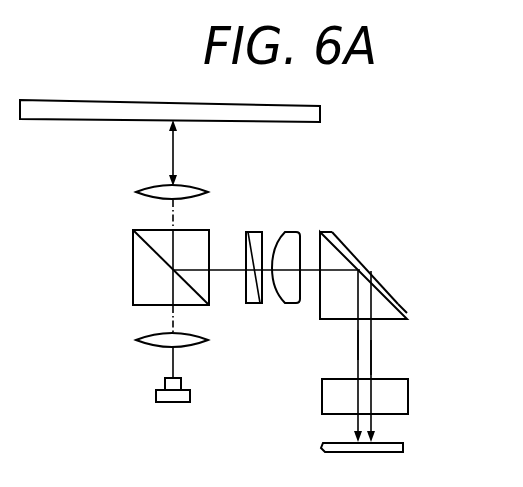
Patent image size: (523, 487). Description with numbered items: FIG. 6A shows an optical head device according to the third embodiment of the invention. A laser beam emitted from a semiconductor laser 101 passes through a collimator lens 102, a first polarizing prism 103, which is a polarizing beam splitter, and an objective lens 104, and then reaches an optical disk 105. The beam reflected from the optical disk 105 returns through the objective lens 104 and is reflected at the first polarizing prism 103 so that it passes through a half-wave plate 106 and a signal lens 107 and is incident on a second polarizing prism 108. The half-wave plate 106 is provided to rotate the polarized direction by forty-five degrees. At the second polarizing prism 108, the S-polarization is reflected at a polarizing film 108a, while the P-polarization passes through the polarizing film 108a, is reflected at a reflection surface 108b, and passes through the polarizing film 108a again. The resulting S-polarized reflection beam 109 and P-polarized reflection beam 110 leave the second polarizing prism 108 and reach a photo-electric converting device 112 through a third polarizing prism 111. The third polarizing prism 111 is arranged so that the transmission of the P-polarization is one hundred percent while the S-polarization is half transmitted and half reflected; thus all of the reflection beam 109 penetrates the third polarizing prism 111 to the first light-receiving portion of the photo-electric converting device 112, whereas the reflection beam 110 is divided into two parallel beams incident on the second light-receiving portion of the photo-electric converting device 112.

The semiconductor laser 101 is at (156, 396).
The collimator lens 102 is at (135, 338).
The first polarizing prism 103 is at (133, 263).
The objective lens 104 is at (135, 193).
The optical disk 105 is at (320, 111).
The half-wave plate 106 is at (250, 305).
The signal lens 107 is at (287, 232).
The second polarizing prism 108 is at (397, 260).
The polarizing film 108a is at (398, 303).
The reflection surface 108b is at (378, 278).
The reflection beam 109 is at (356, 343).
The reflection beam 110 is at (373, 370).
The third polarizing prism 111 is at (408, 396).
The photo-electric converting device 112 is at (395, 443).